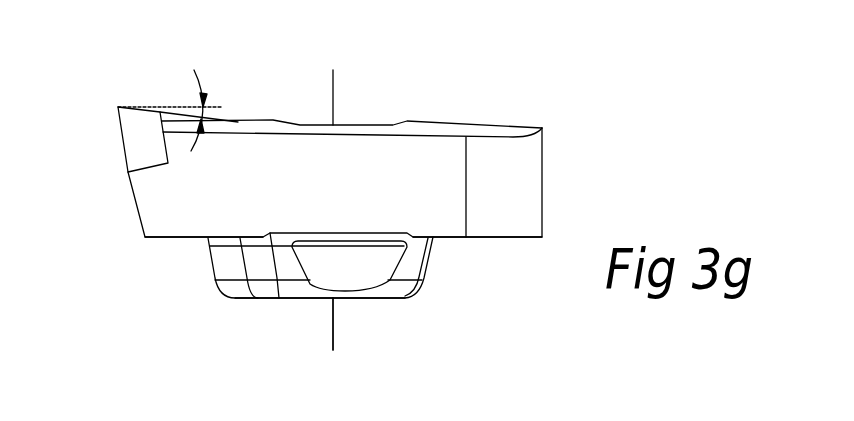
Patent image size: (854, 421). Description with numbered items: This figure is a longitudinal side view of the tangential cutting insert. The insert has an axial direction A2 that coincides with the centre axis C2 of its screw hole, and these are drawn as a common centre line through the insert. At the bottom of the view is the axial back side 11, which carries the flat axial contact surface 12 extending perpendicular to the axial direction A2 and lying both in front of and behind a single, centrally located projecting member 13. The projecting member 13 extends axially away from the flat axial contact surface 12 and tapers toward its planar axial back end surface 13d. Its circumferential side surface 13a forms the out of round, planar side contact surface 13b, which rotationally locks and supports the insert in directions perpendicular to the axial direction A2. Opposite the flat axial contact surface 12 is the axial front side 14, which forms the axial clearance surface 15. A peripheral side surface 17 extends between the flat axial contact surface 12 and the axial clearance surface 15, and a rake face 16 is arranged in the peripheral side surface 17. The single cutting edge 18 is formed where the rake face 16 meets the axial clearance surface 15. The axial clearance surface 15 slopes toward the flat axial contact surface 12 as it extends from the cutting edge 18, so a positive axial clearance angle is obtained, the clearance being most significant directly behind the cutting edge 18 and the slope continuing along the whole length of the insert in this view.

The axial back side 11 is at (447, 322).
The flat axial contact surface 12 is at (177, 237).
The projecting member 13 is at (245, 306).
The circumferential side surface 13a is at (225, 263).
The side contact surface 13b is at (361, 268).
The axial back end surface 13d is at (293, 302).
The axial front side 14 is at (490, 101).
The axial clearance surface 15 is at (151, 112).
The rake face 16 is at (122, 133).
The peripheral side surface 17 is at (412, 158).
The cutting edge 18 is at (112, 100).
The centre axis C2 is at (328, 336).
The axial direction A2 is at (348, 378).